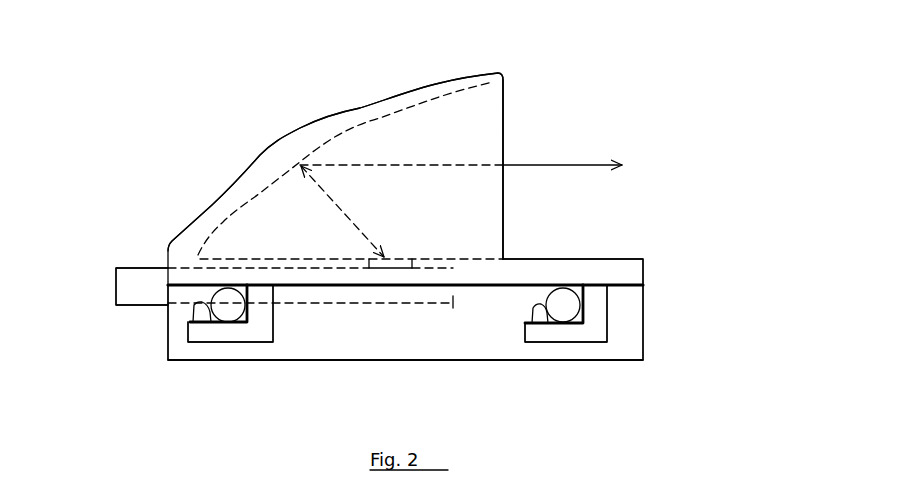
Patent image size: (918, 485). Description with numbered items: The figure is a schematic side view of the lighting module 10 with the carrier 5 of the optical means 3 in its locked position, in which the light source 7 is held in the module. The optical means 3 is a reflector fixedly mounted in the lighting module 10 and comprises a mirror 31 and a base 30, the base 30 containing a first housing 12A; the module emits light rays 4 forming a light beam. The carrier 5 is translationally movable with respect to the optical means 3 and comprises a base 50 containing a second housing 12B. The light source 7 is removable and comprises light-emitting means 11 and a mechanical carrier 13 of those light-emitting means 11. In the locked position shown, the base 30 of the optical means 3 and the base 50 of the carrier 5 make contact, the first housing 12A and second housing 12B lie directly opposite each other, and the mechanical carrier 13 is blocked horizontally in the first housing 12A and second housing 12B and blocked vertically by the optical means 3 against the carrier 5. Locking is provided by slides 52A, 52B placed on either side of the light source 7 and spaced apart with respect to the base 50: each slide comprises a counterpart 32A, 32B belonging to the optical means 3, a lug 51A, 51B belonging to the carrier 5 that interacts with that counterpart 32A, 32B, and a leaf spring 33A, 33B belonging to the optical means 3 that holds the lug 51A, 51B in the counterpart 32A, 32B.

The lighting module 10 is at (220, 90).
The optical means 3 is at (683, 153).
The base 30 is at (582, 276).
The mirror 31 is at (503, 217).
The light rays 4 is at (530, 163).
The light-emitting means 11 is at (388, 264).
The first housing 12A is at (424, 281).
The second housing 12B is at (385, 304).
The mechanical carrier 13 is at (147, 267).
The light source 7 is at (100, 257).
The carrier 5 is at (663, 288).
The base 50 is at (630, 350).
The lug 51A is at (563, 290).
The lug 51B is at (223, 290).
The slide 52A is at (628, 400).
The slide 52B is at (275, 385).
The counterpart 32A is at (550, 345).
The counterpart 32B is at (228, 333).
The leaf spring 33A is at (532, 310).
The leaf spring 33B is at (200, 304).